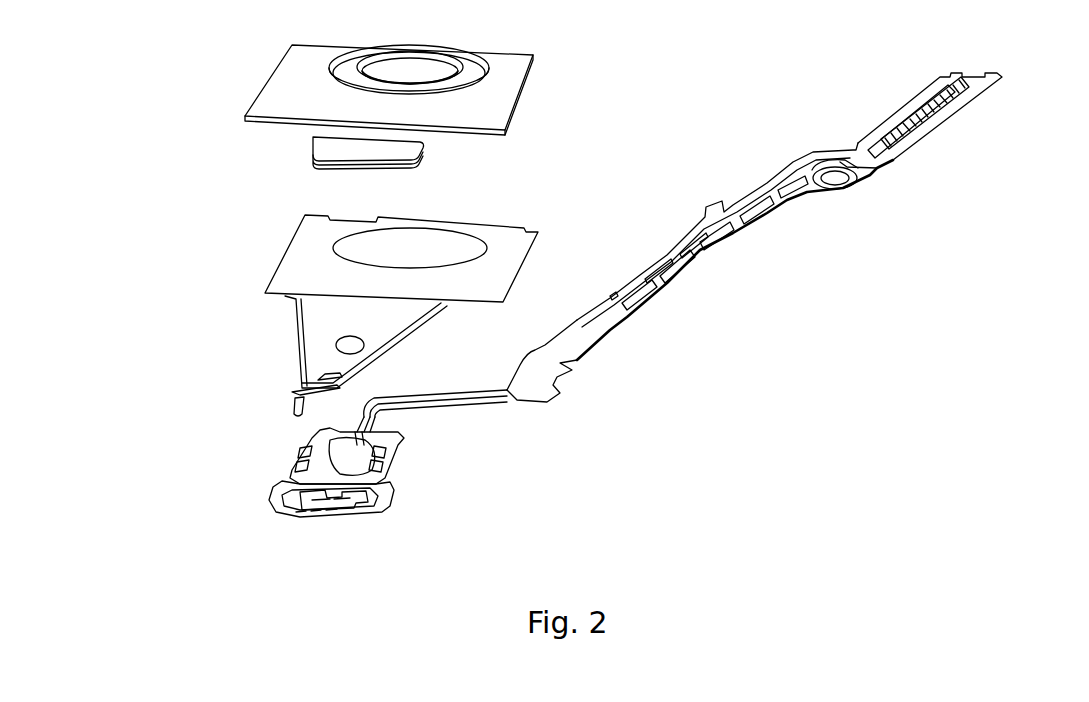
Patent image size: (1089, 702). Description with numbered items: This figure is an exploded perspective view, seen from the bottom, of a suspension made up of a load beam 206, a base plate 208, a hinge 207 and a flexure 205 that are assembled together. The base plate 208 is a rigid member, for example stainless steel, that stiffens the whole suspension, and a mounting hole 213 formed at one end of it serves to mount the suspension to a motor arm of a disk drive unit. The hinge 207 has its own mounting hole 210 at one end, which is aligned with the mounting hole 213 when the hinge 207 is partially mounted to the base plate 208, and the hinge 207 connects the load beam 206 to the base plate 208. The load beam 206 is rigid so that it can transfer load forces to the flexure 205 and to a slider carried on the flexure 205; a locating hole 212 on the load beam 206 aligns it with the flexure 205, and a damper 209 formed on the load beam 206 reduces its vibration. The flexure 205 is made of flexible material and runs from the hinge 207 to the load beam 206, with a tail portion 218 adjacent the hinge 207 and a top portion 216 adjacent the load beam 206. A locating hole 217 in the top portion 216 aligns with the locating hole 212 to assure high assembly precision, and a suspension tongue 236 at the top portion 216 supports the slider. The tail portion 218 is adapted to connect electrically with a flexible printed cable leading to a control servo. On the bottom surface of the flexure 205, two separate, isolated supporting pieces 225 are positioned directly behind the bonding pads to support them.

The flexure 205 is at (460, 402).
The load beam 206 is at (312, 313).
The hinge 207 is at (307, 273).
The base plate 208 is at (282, 100).
The damper 209 is at (330, 147).
The mounting hole 210 is at (398, 250).
The locating hole 212 is at (340, 347).
The mounting hole 213 is at (398, 70).
The top portion 216 is at (268, 515).
The locating hole 217 is at (343, 457).
The tail portion 218 is at (977, 118).
The supporting pieces 225 is at (325, 512).
The suspension tongue 236 is at (315, 498).